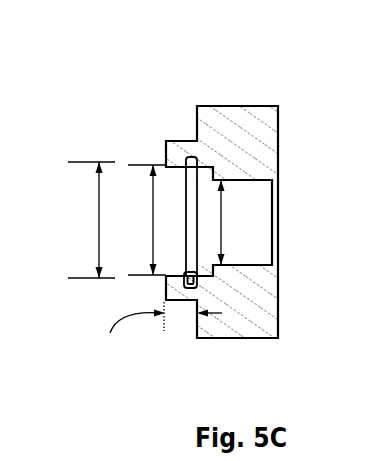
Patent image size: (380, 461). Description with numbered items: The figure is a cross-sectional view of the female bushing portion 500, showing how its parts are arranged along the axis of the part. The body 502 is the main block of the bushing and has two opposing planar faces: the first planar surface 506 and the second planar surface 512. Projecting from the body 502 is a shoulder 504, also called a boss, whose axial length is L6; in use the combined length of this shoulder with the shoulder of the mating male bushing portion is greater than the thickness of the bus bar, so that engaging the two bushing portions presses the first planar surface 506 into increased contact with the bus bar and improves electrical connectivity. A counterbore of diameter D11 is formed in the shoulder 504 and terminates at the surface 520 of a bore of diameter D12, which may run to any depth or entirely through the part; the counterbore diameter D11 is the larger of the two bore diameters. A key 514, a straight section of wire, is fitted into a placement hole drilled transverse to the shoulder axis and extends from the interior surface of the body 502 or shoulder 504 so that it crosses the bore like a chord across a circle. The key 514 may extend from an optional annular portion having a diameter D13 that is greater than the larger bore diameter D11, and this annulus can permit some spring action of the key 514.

The female bushing portion 500 is at (180, 203).
The body 502 is at (223, 124).
The shoulder 504 is at (175, 152).
The first planar surface 506 is at (197, 131).
The second planar surface 512 is at (280, 332).
The key 514 is at (184, 283).
The surface of bore 520 is at (215, 278).
The counterbore diameter D11 is at (135, 220).
The bore diameter D12 is at (222, 215).
The annular portion diameter D13 is at (83, 220).
The shoulder length L6 is at (158, 332).